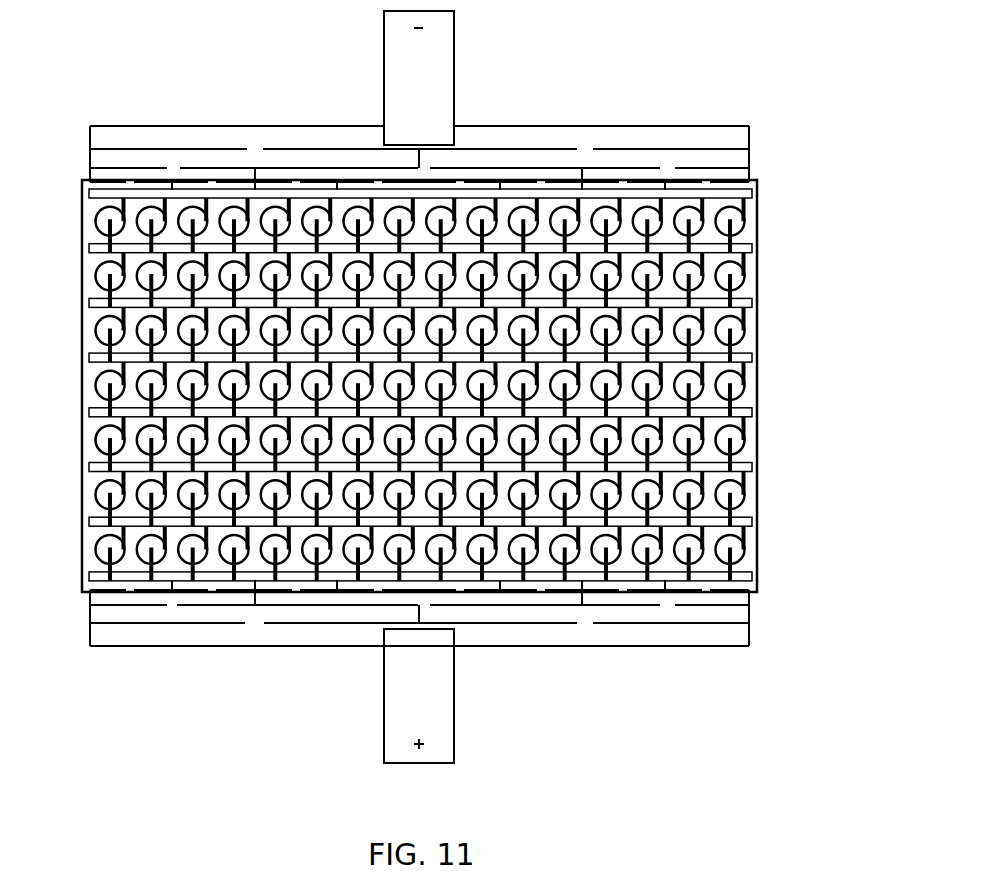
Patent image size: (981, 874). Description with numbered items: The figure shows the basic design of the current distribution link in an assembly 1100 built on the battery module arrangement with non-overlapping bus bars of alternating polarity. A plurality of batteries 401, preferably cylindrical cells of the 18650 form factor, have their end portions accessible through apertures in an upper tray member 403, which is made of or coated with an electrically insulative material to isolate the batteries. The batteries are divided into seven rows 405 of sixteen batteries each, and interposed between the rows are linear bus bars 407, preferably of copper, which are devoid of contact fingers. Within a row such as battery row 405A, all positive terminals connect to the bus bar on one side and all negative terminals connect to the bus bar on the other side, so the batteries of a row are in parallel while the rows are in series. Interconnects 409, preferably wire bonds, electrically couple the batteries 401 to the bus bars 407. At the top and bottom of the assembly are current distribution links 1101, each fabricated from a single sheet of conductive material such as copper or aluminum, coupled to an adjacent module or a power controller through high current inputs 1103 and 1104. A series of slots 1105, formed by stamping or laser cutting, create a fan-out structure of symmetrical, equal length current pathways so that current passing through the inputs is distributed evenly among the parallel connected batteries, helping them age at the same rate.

The assembly 1100 is at (176, 101).
The current distribution link 1101 is at (508, 126).
The high current input 1103 is at (443, 712).
The high current input 1104 is at (443, 75).
The slots 1105 is at (358, 618).
The battery 401 is at (98, 442).
The upper tray member 403 is at (758, 218).
The battery row 405 is at (760, 328).
The battery row 405A is at (760, 553).
The linear bus bar 407 is at (92, 303).
The interconnect 409 is at (735, 507).